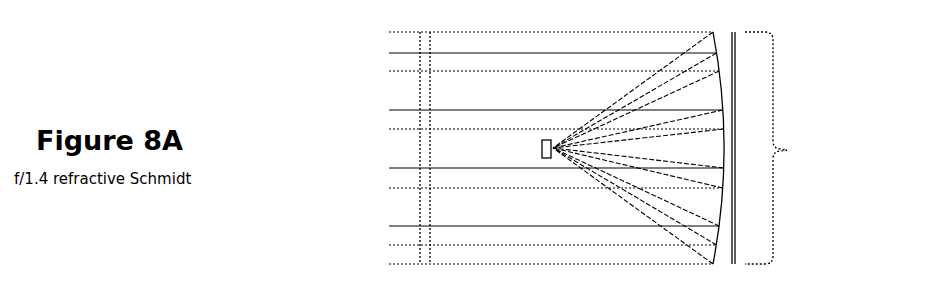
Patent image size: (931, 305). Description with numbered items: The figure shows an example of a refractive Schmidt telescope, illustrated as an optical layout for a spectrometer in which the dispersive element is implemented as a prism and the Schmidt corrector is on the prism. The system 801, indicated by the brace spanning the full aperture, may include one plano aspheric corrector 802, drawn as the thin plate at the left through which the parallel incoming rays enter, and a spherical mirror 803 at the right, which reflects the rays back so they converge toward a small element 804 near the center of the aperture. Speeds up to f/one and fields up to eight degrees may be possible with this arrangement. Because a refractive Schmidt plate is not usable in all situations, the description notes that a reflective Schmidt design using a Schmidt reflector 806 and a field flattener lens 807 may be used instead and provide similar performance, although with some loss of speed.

The system 801 is at (797, 148).
The plano aspheric corrector 802 is at (424, 62).
The spherical mirror 803 is at (740, 265).
The detector / focal plane 804 is at (541, 146).
The Schmidt reflector 806 is at (393, 304).
The field flattener lens 807 is at (562, 290).